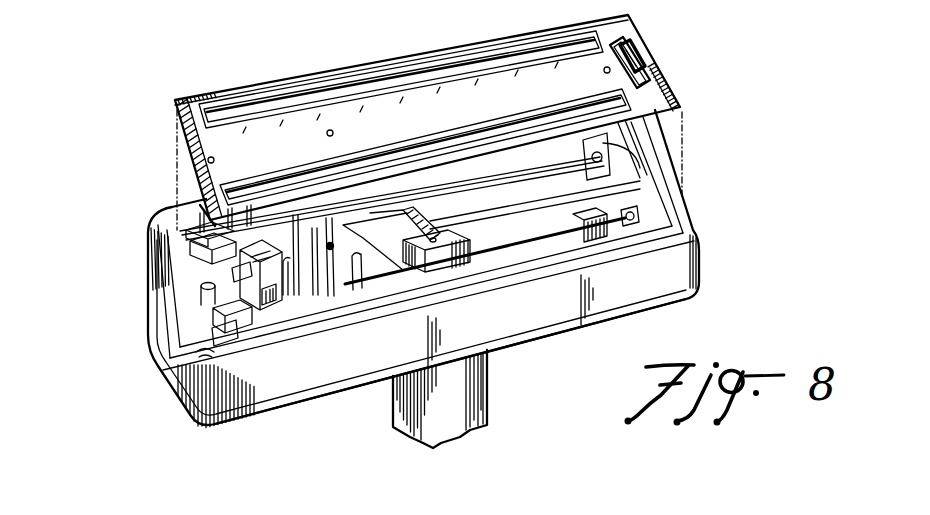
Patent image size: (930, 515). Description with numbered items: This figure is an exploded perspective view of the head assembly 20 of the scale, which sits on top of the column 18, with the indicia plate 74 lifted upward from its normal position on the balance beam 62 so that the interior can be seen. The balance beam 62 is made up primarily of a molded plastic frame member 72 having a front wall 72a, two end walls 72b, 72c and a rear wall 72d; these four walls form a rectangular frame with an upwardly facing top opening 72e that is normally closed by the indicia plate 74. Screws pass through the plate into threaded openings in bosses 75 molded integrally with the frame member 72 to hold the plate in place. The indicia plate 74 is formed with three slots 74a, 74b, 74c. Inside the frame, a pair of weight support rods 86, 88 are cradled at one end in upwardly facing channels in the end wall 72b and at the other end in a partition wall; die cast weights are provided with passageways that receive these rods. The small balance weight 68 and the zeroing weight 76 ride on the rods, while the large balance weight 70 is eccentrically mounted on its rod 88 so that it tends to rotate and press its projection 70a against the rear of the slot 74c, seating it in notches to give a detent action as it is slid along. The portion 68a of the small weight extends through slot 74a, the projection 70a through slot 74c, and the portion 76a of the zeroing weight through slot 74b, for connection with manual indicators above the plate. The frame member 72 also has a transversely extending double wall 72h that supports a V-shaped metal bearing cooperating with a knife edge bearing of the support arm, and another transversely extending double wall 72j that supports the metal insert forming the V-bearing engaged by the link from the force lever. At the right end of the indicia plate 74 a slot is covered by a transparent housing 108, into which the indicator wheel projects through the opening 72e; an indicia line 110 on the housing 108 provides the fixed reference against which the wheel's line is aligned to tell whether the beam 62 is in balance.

The column 18 is at (490, 393).
The head assembly 20 is at (150, 402).
The balance beam 62 is at (210, 428).
The small balance weight 68 is at (238, 251).
The portion of small weight 68a is at (213, 224).
The large balance weight 70 is at (374, 243).
The projection of large weight 70a is at (460, 250).
The frame member 72 is at (637, 313).
The front wall 72a is at (338, 382).
The end wall 72b is at (170, 337).
The end wall 72c is at (673, 175).
The rear wall 72d is at (509, 207).
The top opening 72e is at (212, 244).
The transversely extending double wall 72h is at (328, 243).
The transversely extending double wall 72j is at (240, 273).
The indicia plate 74 is at (175, 100).
The slot 74a is at (267, 107).
The slot 74b is at (207, 207).
The slot 74c is at (380, 153).
The bosses 75 is at (200, 298).
The zeroing weight 76 is at (228, 330).
The portion of zeroing weight 76a is at (243, 312).
The weight support rod 86 is at (545, 185).
The weight support rod 88 is at (523, 246).
The transparent housing 108 is at (637, 55).
The indicia line 110 is at (627, 43).